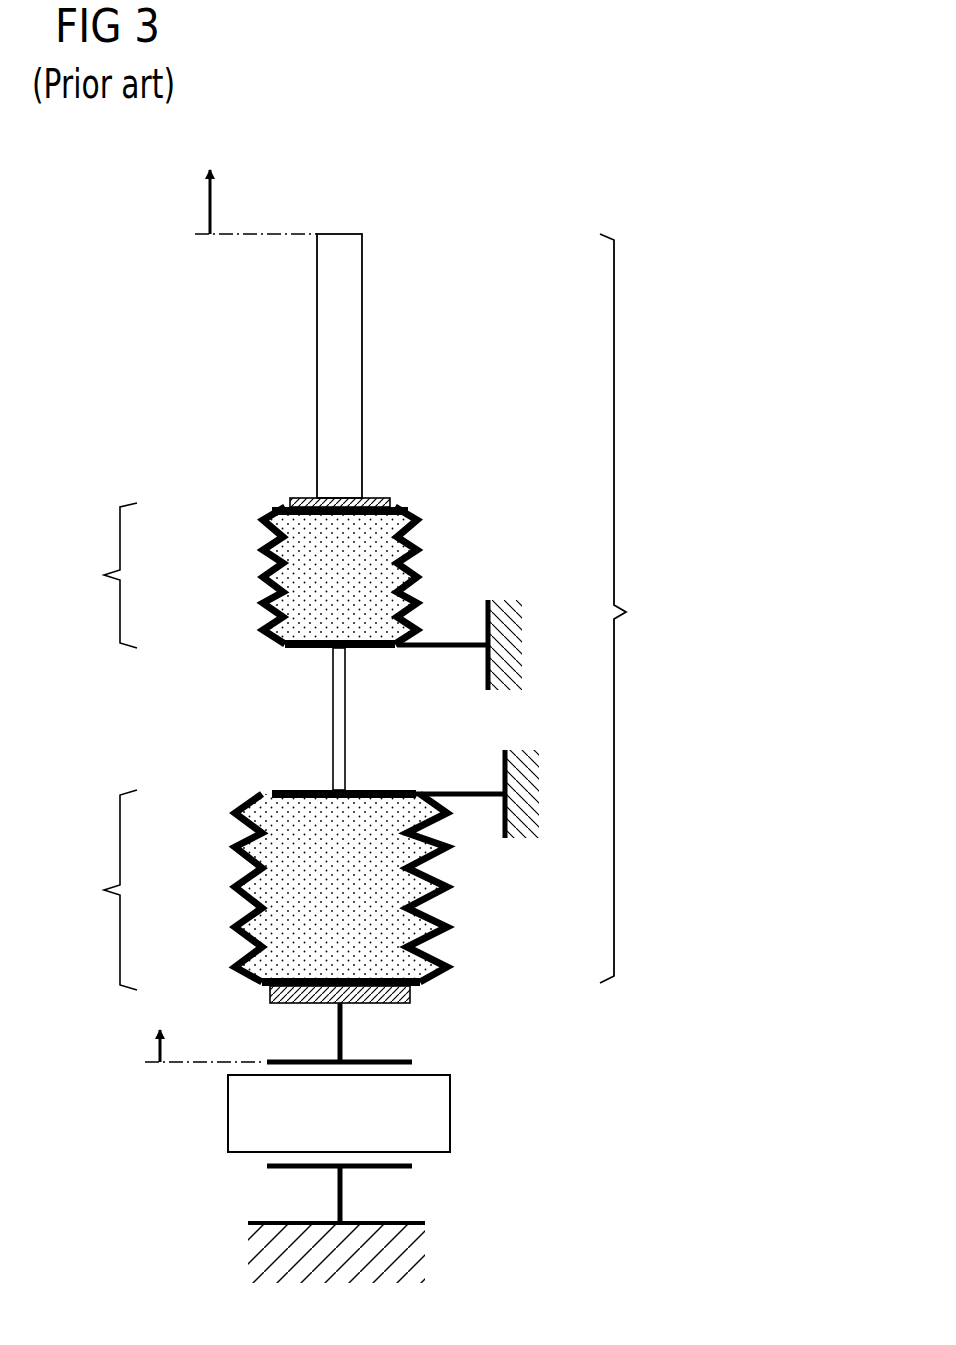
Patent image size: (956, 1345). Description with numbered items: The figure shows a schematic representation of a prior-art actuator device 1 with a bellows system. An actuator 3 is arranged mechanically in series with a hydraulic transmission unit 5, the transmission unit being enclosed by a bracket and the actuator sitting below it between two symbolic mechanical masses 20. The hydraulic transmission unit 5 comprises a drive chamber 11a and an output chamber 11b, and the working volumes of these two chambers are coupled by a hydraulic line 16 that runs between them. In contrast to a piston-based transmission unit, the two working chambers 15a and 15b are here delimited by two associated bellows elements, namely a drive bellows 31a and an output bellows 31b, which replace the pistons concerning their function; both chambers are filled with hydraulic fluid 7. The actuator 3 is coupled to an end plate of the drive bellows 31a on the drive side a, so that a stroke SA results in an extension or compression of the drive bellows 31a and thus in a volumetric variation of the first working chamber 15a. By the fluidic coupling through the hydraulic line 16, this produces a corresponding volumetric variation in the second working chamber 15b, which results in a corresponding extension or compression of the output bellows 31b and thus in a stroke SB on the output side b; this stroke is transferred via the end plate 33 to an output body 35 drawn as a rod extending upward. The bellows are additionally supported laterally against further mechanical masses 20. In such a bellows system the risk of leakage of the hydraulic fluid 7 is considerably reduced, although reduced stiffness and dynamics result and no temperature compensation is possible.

The actuator device 1 is at (692, 303).
The actuator 3 is at (248, 1118).
The hydraulic transmission unit 5 is at (627, 608).
The hydraulic fluid 7 is at (300, 810).
The drive chamber 11a is at (291, 864).
The output chamber 11b is at (283, 575).
The first working chamber 15a is at (280, 848).
The second working chamber 15b is at (270, 590).
The hydraulic line 16 is at (346, 722).
The mechanical mass 20 is at (506, 668).
The drive bellows 31a is at (430, 915).
The output bellows 31b is at (405, 572).
The end plate 33 is at (383, 497).
The output body 35 is at (363, 268).
The drive side a is at (486, 1075).
The output side b is at (488, 210).
The stroke on the drive side SA is at (191, 1040).
The stroke on the output side SB is at (242, 196).